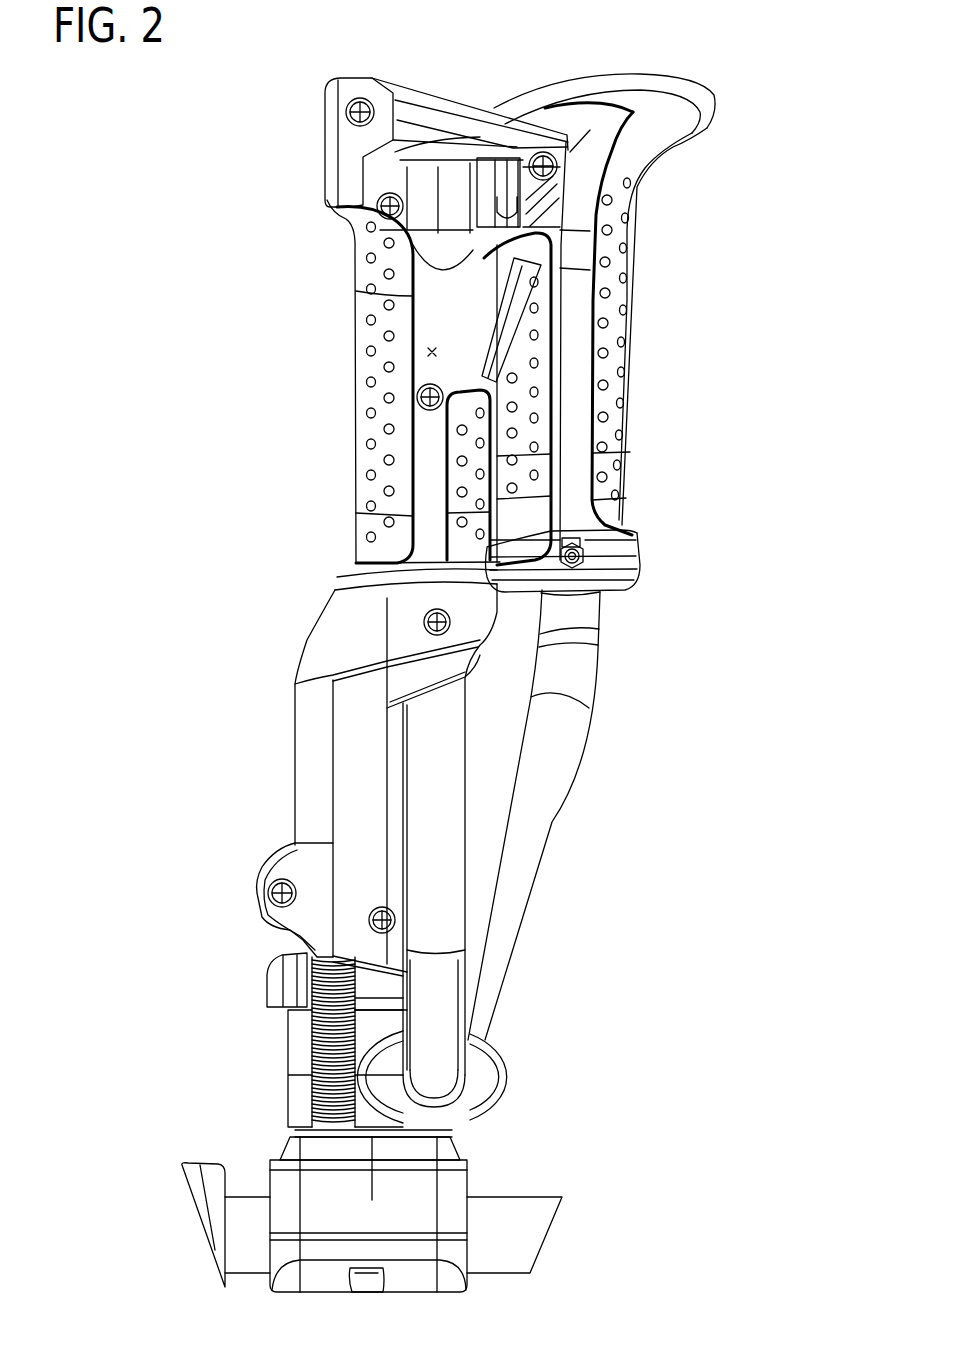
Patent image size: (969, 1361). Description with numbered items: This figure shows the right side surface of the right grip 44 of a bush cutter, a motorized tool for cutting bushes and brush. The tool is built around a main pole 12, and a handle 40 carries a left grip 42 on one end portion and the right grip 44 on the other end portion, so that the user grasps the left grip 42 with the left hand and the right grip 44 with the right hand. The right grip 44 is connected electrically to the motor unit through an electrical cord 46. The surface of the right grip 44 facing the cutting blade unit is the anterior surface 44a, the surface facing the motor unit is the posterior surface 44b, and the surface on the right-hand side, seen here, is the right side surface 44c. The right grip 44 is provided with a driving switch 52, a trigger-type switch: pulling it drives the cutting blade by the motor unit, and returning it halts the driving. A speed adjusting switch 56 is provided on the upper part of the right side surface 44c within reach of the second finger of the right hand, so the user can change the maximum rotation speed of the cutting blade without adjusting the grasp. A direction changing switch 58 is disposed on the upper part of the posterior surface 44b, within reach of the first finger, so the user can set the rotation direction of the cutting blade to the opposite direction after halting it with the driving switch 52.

The main pole 12 is at (538, 1195).
The handle 40 is at (534, 890).
The left grip 42 is at (650, 527).
The right grip 44 is at (374, 395).
The anterior surface 44a is at (507, 440).
The posterior surface 44b is at (350, 388).
The right side surface 44c is at (428, 352).
The electrical cord 46 is at (312, 1037).
The driving switch 52 is at (520, 297).
The speed adjusting switch 56 is at (525, 188).
The direction changing switch 58 is at (326, 143).